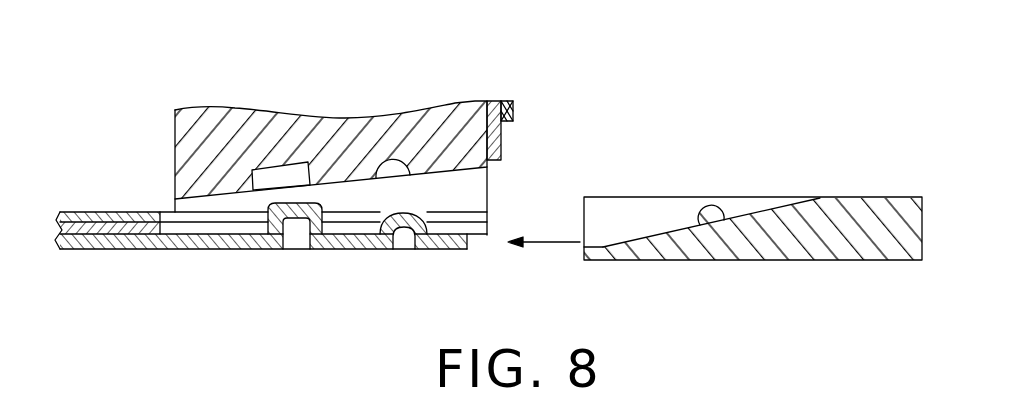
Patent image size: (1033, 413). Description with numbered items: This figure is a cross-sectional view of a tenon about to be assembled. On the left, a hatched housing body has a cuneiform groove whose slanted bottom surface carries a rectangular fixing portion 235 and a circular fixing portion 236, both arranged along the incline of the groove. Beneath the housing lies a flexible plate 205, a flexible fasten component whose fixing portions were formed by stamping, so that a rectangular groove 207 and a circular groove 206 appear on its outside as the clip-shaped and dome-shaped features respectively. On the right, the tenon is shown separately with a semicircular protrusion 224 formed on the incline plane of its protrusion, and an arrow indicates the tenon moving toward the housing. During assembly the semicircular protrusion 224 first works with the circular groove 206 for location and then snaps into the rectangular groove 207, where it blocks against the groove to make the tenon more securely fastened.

The flexible plate 205 is at (450, 240).
The circular groove 206 is at (405, 240).
The rectangular groove 207 is at (297, 238).
The semicircular protrusion 224 is at (712, 220).
The rectangular fixing portion 235 is at (282, 178).
The circular fixing portion 236 is at (397, 172).